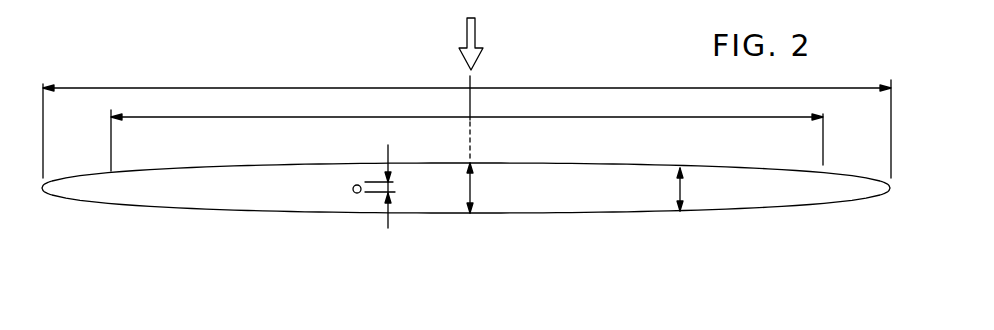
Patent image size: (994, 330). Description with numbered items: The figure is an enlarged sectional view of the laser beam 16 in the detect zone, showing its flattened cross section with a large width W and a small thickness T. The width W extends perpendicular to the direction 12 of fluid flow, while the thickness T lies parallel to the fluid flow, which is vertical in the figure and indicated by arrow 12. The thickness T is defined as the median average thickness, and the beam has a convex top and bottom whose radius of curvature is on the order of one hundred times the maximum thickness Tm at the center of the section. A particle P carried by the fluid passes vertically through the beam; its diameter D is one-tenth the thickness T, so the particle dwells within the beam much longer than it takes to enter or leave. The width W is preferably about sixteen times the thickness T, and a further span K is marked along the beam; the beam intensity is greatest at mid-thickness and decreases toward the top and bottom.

The direction of fluid flow 12 is at (476, 33).
The laser beam 16 is at (604, 214).
The width W is at (193, 88).
The inner length dimension K is at (273, 117).
The maximum thickness Tm is at (470, 190).
The thickness T is at (682, 188).
The diameter D is at (392, 187).
The particle P is at (352, 187).